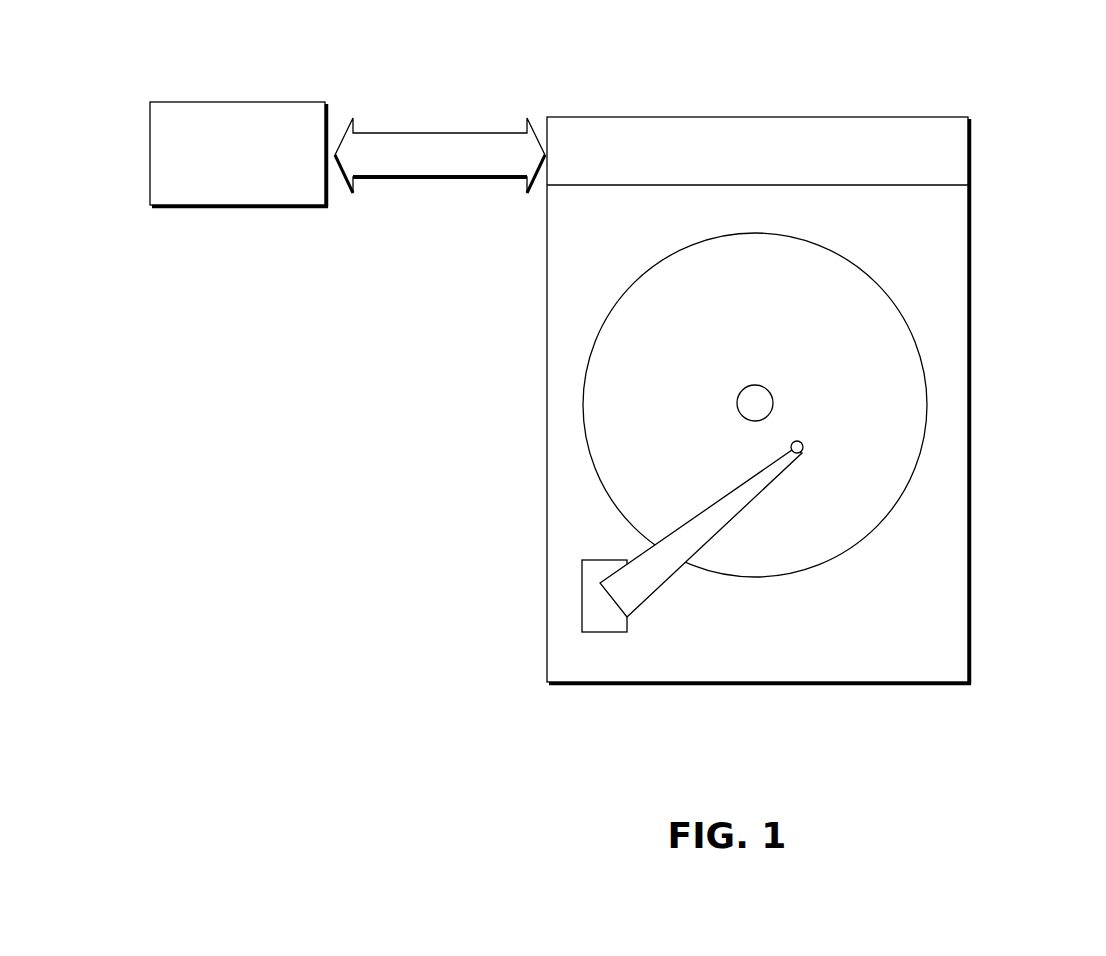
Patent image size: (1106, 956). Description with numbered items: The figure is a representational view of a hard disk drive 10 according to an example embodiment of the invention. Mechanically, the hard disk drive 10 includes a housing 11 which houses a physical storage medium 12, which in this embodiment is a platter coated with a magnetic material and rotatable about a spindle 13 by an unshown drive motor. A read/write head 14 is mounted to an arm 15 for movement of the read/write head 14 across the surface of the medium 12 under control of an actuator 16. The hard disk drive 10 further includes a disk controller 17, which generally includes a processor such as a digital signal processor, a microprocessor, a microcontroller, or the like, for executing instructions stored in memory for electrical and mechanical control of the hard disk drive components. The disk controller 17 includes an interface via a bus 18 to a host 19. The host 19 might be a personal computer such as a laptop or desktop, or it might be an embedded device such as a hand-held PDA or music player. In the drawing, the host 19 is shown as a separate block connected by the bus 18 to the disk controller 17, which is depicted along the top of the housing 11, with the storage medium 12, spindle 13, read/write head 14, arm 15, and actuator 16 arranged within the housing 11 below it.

The hard disk drive 10 is at (769, 406).
The housing 11 is at (547, 478).
The physical storage medium 12 is at (880, 281).
The spindle 13 is at (767, 383).
The read/write head 14 is at (803, 441).
The arm 15 is at (653, 578).
The actuator 16 is at (593, 607).
The disk controller 17 is at (920, 126).
The bus 18 is at (460, 133).
The host 19 is at (268, 102).